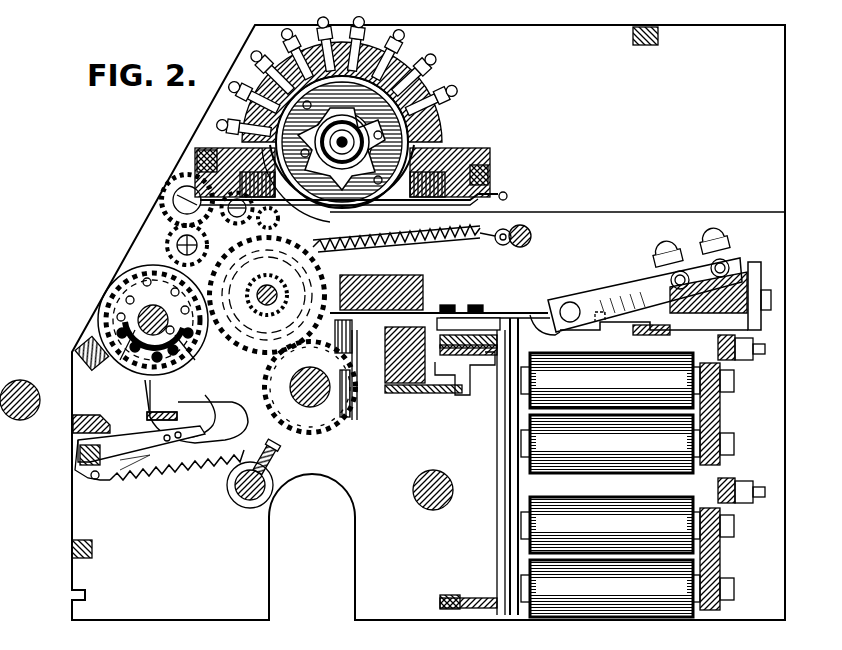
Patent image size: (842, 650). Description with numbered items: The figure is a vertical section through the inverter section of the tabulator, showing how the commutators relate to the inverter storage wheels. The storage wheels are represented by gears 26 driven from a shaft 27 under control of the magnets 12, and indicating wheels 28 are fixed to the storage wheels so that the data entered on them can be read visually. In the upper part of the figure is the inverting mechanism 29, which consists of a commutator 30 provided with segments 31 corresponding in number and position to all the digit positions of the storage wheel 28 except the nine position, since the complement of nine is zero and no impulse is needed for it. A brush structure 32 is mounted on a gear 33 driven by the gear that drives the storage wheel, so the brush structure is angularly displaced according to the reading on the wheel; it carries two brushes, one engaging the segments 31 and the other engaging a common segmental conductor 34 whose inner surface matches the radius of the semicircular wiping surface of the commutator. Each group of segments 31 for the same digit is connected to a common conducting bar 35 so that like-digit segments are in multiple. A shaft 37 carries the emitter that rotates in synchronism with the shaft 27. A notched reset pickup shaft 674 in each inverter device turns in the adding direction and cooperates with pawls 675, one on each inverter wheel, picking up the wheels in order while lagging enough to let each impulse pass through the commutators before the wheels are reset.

The magnets 12 is at (587, 388).
The gears 26 is at (130, 305).
The shaft 27 is at (268, 302).
The indicating wheels 28 is at (138, 280).
The inverting mechanism 29 is at (391, 92).
The commutator 30 is at (380, 148).
The segments 31 is at (420, 83).
The brush structure 32 is at (445, 137).
The gear 33 is at (395, 222).
The common segmental conductor 34 is at (338, 212).
The common conducting bar 35 is at (367, 32).
The shaft 37 is at (318, 405).
The notched reset pickup shaft 674 is at (207, 320).
The pawls 675 is at (153, 355).